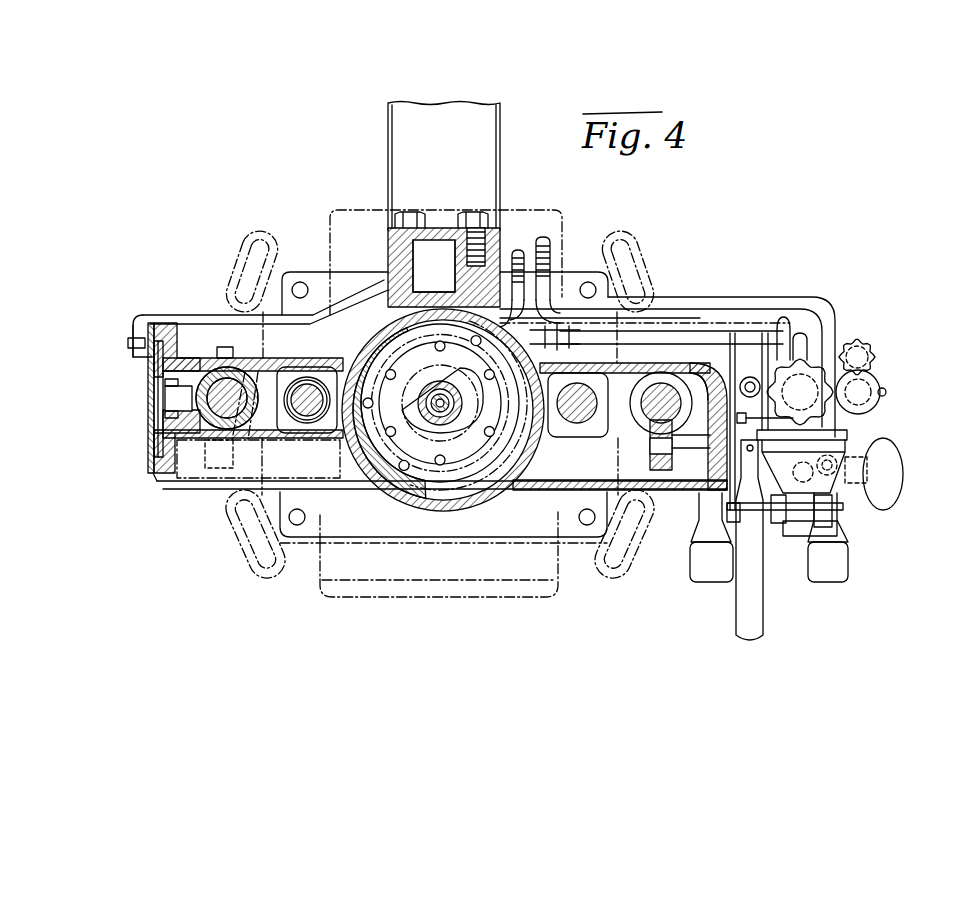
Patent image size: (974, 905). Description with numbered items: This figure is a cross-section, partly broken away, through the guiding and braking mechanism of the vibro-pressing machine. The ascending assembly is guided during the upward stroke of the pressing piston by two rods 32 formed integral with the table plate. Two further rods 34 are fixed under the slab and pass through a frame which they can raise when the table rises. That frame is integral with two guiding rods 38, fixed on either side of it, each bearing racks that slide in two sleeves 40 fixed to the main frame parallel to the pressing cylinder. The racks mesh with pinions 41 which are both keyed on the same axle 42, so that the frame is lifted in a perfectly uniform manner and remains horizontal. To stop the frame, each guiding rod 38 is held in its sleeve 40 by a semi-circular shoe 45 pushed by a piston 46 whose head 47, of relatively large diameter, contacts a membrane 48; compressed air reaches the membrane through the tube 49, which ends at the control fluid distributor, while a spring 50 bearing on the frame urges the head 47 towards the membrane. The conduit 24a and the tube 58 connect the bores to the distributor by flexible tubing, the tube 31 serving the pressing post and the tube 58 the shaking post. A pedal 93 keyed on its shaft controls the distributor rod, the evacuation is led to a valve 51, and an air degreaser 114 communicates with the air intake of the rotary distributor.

The conduit 24a is at (546, 272).
The tube 31 is at (678, 338).
The guiding rods 32 is at (307, 390).
The rods 34 is at (292, 443).
The guiding rods 38 is at (216, 432).
The sleeves 40 is at (238, 380).
The pinions 41 is at (220, 468).
The axle 42 is at (560, 445).
The semi-circular shoe 45 is at (212, 383).
The piston 46 is at (163, 408).
The piston head 47 is at (160, 365).
The membrane 48 is at (163, 458).
The tube 49 is at (136, 326).
The spring 50 is at (170, 395).
The valve 51 is at (878, 382).
The tube 58 is at (518, 258).
The pedal 93 is at (711, 570).
The air degreaser 114 is at (900, 480).